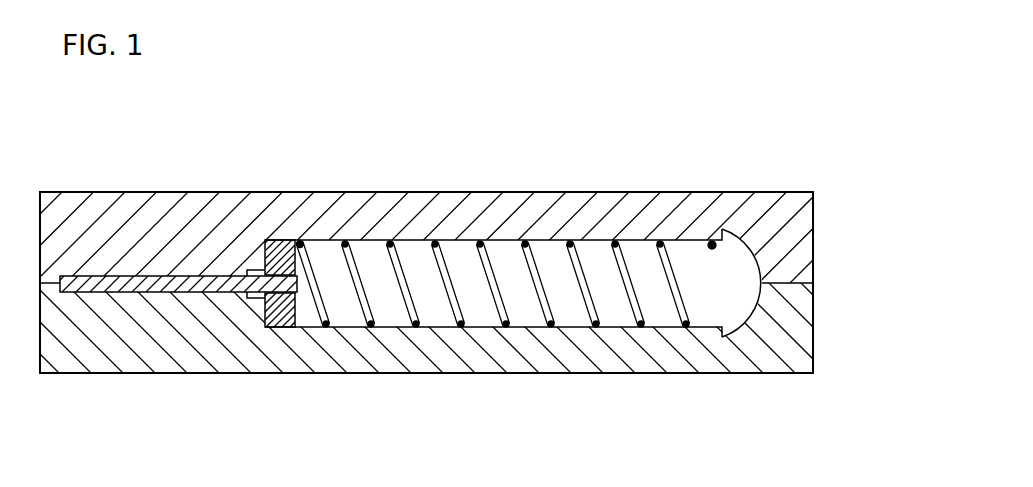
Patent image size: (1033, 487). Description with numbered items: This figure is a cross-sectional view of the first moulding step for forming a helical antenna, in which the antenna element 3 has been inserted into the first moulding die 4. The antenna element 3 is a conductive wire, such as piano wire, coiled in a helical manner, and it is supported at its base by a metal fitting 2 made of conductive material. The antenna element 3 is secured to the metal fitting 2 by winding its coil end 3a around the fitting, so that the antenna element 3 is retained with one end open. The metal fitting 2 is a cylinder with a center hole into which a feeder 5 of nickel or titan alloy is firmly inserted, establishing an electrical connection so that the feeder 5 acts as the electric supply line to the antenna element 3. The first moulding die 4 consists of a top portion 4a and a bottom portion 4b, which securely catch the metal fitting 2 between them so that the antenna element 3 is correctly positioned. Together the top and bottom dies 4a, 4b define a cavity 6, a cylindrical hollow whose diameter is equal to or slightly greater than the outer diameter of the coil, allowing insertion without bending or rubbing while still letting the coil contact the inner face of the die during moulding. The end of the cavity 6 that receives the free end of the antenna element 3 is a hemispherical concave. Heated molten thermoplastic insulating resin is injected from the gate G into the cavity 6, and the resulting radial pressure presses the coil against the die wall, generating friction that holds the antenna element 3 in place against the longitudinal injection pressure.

The metal fitting 2 is at (266, 318).
The antenna element 3 is at (452, 295).
The coil end 3a is at (301, 244).
The first moulding die 4 is at (455, 282).
The top portion 4a is at (790, 237).
The bottom portion 4b is at (800, 322).
The feeder 5 is at (112, 290).
The cavity 6 is at (658, 310).
The gate G is at (571, 326).